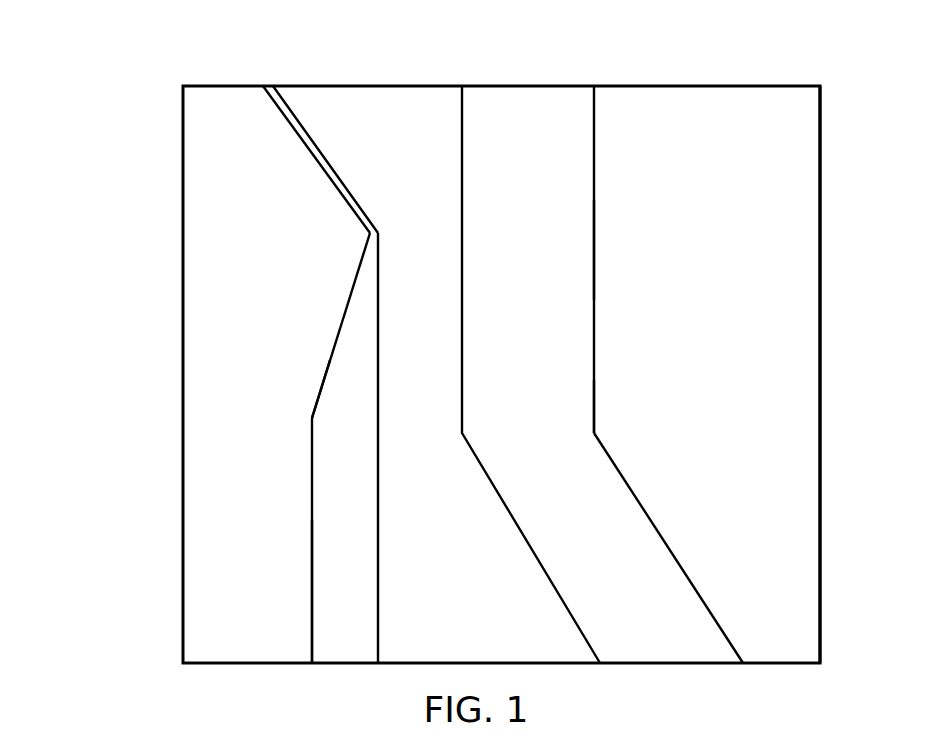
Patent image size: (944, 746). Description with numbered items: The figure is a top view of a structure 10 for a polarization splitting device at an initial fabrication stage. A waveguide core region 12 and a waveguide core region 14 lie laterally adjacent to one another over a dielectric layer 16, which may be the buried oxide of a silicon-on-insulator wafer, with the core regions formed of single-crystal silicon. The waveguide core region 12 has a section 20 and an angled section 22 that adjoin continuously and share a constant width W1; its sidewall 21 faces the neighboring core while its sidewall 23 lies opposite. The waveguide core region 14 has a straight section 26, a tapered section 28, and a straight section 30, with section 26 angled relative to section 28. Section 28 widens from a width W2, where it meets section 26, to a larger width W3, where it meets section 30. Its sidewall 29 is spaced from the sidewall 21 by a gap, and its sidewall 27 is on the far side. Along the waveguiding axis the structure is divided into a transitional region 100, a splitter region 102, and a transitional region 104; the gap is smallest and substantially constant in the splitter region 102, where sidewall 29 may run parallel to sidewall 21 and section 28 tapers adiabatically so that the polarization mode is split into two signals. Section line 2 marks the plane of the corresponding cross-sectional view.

The structure 10 is at (124, 67).
The transitional region 100 is at (163, 84).
The splitter region 102 is at (133, 232).
The transitional region 104 is at (165, 415).
The waveguide core region 12 is at (602, 407).
The waveguide core region 14 is at (308, 510).
The dielectric layer 16 is at (798, 425).
The section 20 is at (538, 168).
The sidewall 21 is at (462, 307).
The section 22 is at (593, 517).
The sidewall 23 is at (595, 233).
The section 26 is at (318, 159).
The sidewall 27 is at (362, 255).
The section 28 is at (345, 392).
The sidewall 29 is at (380, 338).
The section 30 is at (338, 580).
The width W1 is at (527, 633).
The width W2 is at (290, 203).
The width W3 is at (263, 455).
The section line 2 is at (259, 360).